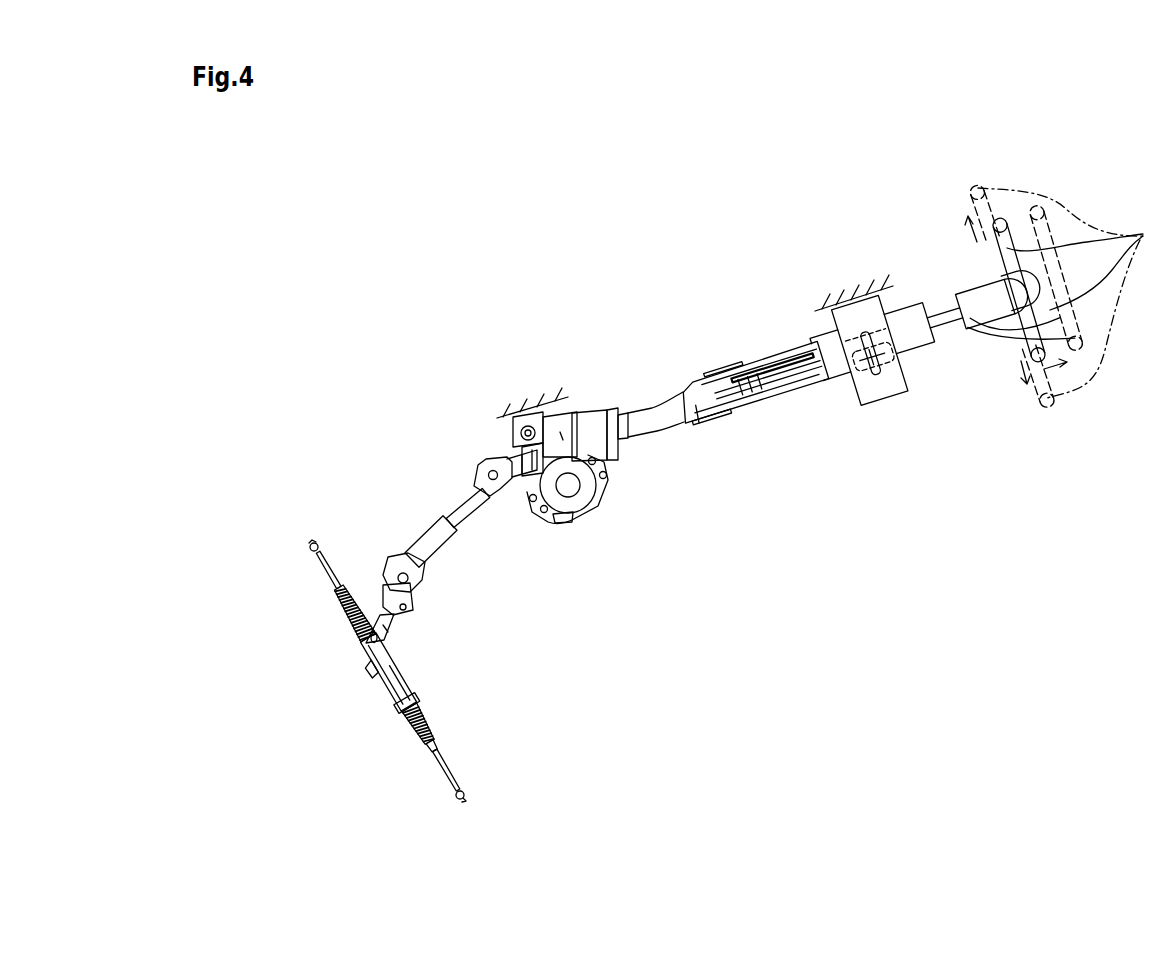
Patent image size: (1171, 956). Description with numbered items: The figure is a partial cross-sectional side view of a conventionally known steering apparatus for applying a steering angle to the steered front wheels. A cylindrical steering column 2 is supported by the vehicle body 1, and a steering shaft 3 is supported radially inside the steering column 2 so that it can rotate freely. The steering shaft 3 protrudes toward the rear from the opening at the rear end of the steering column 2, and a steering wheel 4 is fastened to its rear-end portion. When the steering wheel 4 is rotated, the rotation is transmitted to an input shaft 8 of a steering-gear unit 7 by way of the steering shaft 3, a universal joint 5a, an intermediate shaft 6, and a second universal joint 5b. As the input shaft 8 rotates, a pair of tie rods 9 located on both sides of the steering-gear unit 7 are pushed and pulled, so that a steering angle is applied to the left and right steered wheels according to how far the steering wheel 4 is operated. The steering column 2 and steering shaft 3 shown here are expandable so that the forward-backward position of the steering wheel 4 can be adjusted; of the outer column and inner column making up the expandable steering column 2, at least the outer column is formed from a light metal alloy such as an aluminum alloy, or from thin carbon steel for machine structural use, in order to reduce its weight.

The vehicle body 1 is at (846, 293).
The steering column 2 is at (833, 366).
The steering shaft 3 is at (695, 402).
The steering wheel 4 is at (1062, 290).
The universal joint 5a is at (476, 480).
The universal joint 5b is at (397, 567).
The intermediate shaft 6 is at (435, 547).
The steering-gear unit 7 is at (380, 677).
The input shaft 8 is at (393, 623).
The tie rods 9 is at (310, 553).